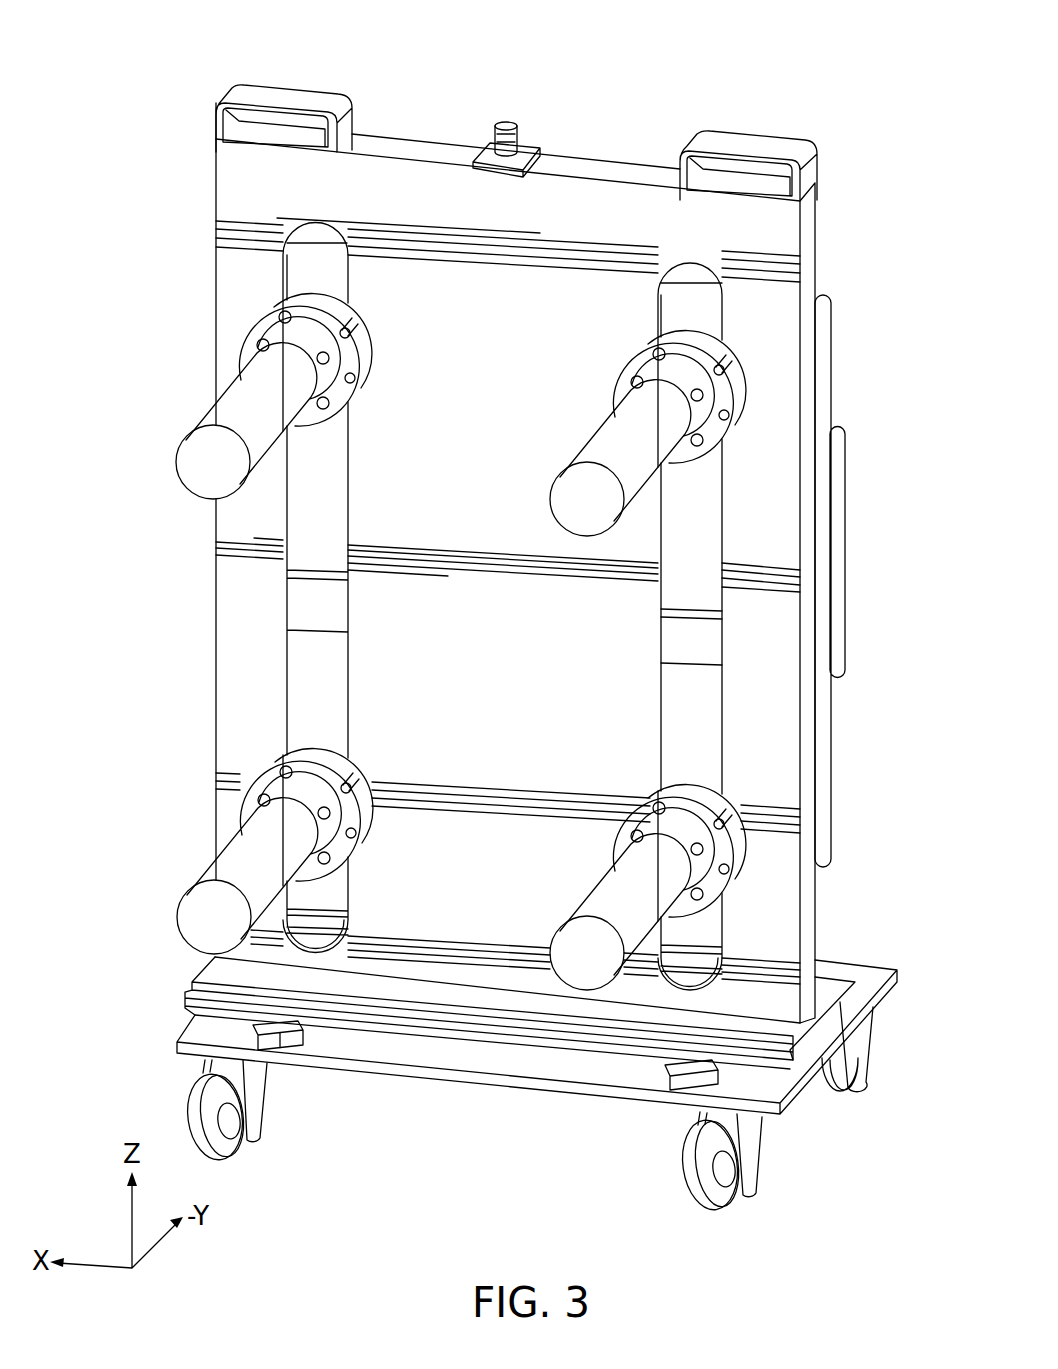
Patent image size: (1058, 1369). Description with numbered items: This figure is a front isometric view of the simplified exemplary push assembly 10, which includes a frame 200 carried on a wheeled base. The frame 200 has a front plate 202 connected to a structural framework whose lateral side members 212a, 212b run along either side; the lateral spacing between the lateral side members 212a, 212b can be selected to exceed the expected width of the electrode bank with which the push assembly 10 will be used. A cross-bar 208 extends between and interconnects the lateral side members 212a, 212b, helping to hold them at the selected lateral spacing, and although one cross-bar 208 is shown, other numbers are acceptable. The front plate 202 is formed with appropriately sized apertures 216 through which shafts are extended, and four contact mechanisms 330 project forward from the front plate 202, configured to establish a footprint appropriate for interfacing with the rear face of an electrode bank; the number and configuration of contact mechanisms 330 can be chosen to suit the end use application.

The push assembly 10 is at (172, 46).
The frame 200 is at (198, 144).
The front plate 202 is at (235, 302).
The cross-bar 208 is at (694, 656).
The lateral side member 212a is at (813, 245).
The lateral side member 212b is at (216, 657).
The aperture 216 is at (697, 540).
The contact mechanism 330 is at (186, 392).